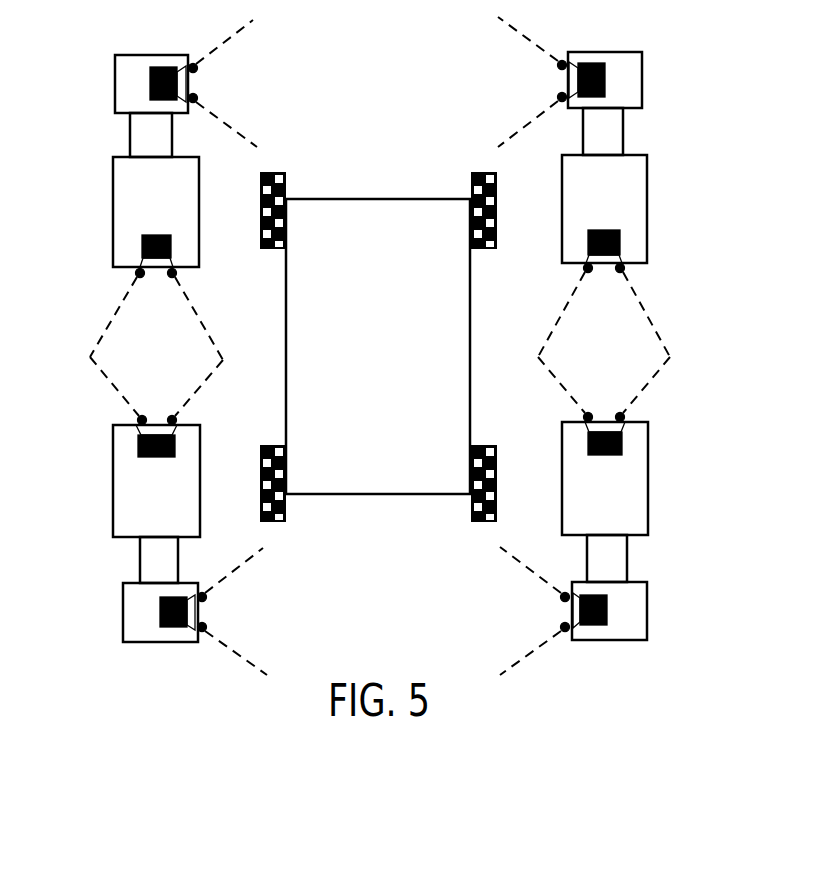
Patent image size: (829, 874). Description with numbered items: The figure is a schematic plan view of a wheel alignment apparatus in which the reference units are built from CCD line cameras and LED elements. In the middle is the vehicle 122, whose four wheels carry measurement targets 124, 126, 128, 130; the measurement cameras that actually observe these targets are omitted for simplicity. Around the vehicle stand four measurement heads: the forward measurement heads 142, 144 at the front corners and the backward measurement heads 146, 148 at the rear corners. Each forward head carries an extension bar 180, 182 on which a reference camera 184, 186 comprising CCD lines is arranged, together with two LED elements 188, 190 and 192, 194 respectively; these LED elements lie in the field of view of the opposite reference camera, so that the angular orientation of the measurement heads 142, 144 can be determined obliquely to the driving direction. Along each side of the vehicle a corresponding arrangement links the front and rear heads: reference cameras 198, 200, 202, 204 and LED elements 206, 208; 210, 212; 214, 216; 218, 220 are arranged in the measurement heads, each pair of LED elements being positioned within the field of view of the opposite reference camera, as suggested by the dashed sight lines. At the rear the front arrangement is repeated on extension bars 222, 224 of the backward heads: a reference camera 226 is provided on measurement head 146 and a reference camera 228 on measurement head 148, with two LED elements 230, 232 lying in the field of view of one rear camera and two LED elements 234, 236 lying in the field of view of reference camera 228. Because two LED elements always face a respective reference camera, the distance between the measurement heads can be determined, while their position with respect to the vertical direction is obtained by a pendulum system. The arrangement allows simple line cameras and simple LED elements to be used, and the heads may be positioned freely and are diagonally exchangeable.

The vehicle 122 is at (471, 338).
The measurement target 124 is at (470, 182).
The measurement target 126 is at (287, 182).
The measurement target 128 is at (287, 508).
The measurement target 130 is at (470, 507).
The forward measurement head 142 is at (628, 190).
The forward measurement head 144 is at (140, 202).
The backward measurement head 146 is at (138, 507).
The backward measurement head 148 is at (628, 482).
The extension bar 180 is at (610, 132).
The extension bar 182 is at (143, 135).
The reference camera 184 is at (596, 65).
The reference camera 186 is at (168, 67).
The LED element 188 is at (557, 65).
The LED element 190 is at (557, 97).
The LED element 192 is at (200, 68).
The LED element 194 is at (200, 98).
The reference camera 198 is at (622, 242).
The reference camera 200 is at (142, 248).
The reference camera 202 is at (138, 441).
The reference camera 204 is at (622, 443).
The LED element 206 is at (588, 275).
The LED element 208 is at (620, 275).
The LED element 210 is at (140, 280).
The LED element 212 is at (172, 280).
The LED element 214 is at (141, 413).
The LED element 216 is at (173, 413).
The LED element 218 is at (587, 410).
The LED element 220 is at (620, 410).
The extension bar 222 is at (613, 560).
The extension bar 224 is at (152, 558).
The reference camera 226 is at (170, 628).
The reference camera 228 is at (592, 627).
The LED element 230 is at (560, 597).
The LED element 232 is at (560, 627).
The LED element 234 is at (208, 597).
The LED element 236 is at (208, 627).